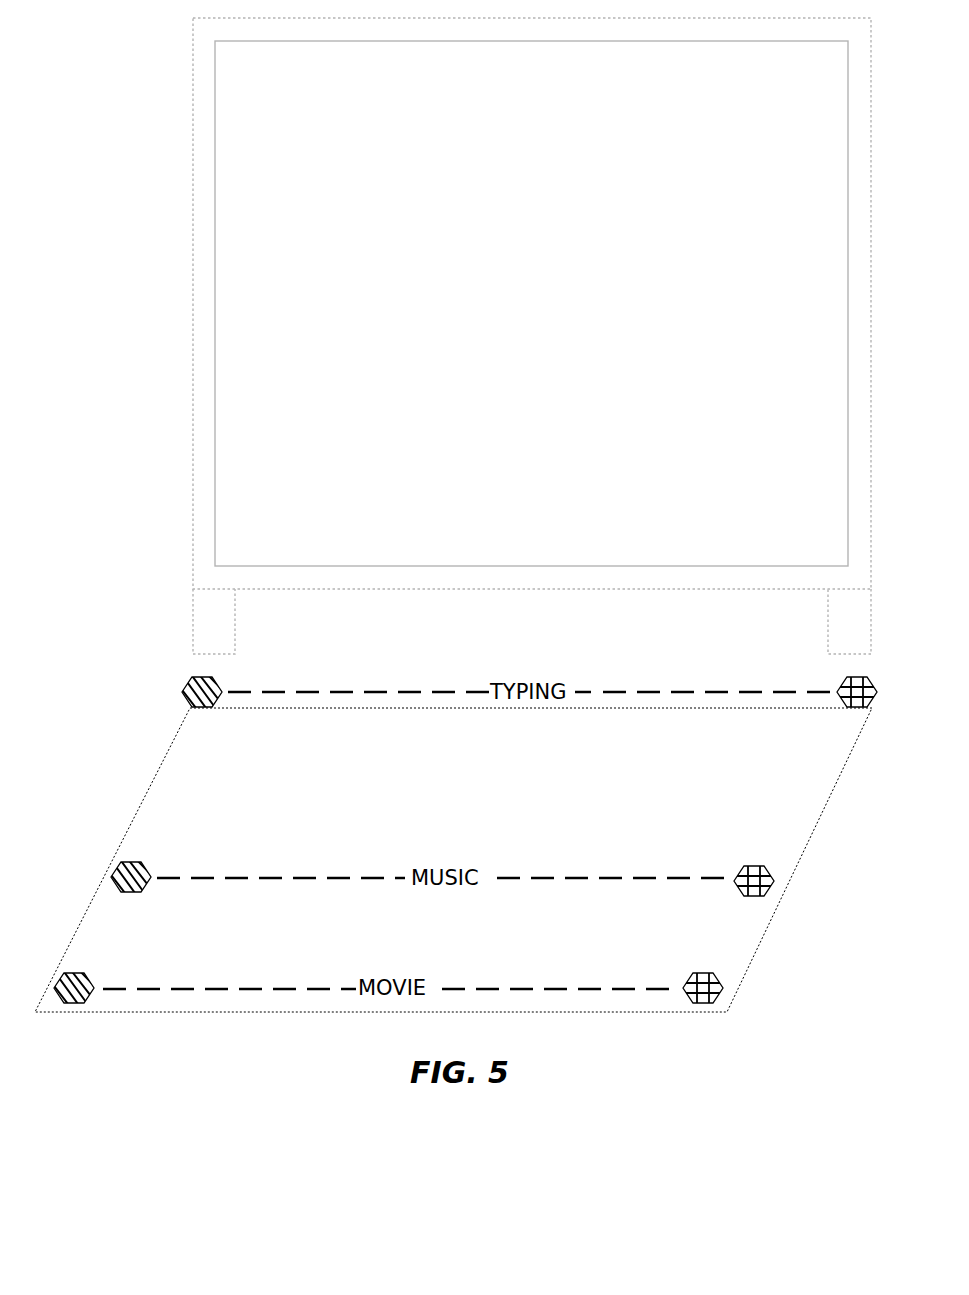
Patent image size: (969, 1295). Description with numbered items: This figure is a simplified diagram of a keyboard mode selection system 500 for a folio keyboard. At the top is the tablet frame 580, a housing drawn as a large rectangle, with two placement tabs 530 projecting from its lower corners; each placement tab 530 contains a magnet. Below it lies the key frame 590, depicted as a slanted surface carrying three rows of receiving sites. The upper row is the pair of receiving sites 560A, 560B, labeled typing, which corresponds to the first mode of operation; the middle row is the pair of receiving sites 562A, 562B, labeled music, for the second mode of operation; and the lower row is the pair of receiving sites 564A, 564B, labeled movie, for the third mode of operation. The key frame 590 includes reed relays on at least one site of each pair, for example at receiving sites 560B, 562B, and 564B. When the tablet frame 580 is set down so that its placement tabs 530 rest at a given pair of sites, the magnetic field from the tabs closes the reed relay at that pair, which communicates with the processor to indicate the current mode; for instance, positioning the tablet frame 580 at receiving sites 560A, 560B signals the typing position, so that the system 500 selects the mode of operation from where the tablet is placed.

The keyboard mode selection system 500 is at (186, 1144).
The placement tabs 530 is at (208, 635).
The tablet frame 580 is at (193, 547).
The key frame 590 is at (178, 778).
The receiving site 560A is at (183, 700).
The receiving site 560B is at (853, 710).
The receiving site 562A is at (108, 870).
The receiving site 562B is at (775, 873).
The receiving site 564A is at (87, 1005).
The receiving site 564B is at (723, 1005).